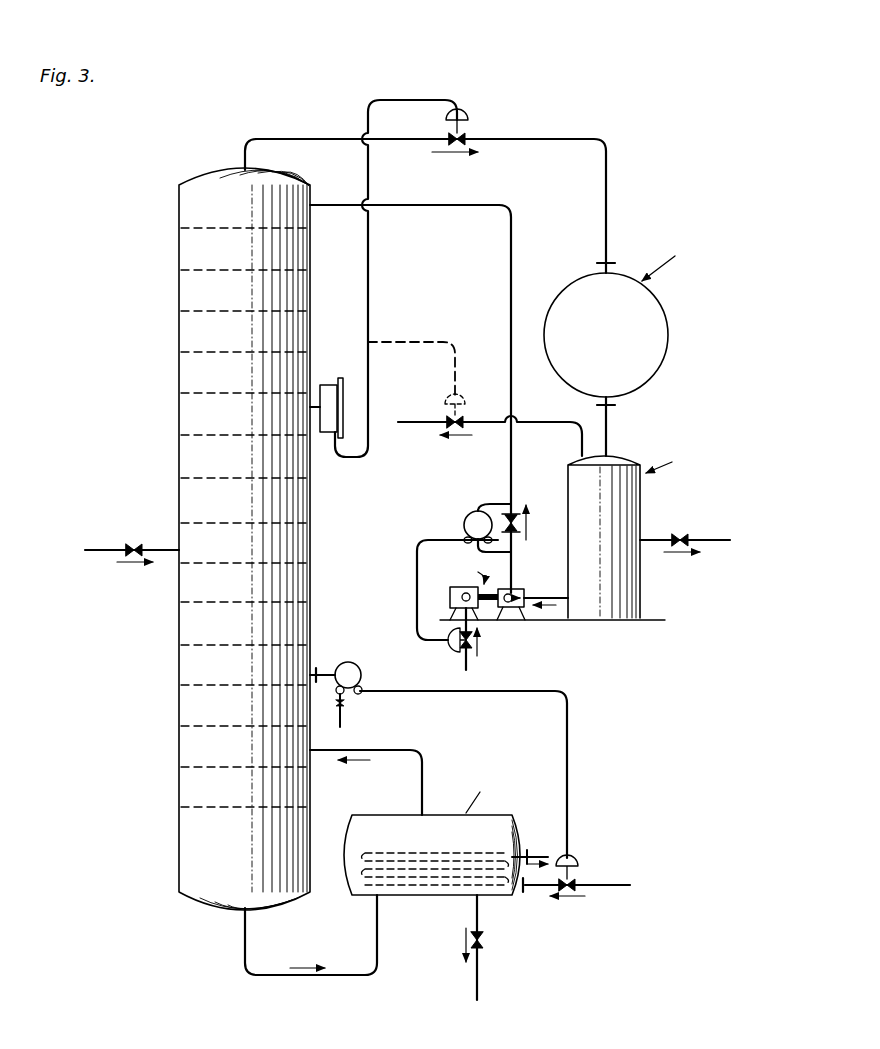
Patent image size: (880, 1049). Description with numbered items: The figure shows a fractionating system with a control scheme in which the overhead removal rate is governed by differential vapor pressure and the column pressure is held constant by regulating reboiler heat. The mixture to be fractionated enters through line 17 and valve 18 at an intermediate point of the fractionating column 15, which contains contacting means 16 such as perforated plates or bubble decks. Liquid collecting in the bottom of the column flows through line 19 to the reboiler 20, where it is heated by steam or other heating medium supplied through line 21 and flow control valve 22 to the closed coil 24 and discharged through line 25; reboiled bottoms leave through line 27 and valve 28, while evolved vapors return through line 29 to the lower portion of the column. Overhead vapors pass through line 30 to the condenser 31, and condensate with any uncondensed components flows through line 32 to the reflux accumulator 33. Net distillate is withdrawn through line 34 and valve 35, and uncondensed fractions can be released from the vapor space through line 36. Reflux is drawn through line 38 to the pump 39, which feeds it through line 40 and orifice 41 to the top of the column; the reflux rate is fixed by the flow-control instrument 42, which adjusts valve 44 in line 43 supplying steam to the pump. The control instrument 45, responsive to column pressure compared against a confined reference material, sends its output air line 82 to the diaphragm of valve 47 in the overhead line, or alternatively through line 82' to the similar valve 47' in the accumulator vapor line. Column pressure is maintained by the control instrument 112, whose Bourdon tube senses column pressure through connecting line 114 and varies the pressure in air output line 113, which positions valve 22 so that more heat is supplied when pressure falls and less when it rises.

The fractionating column 15 is at (178, 373).
The contacting means 16 is at (258, 352).
The line 17 is at (104, 538).
The valve 18 is at (134, 544).
The line 19 is at (272, 973).
The reboiler 20 is at (388, 814).
The line 21 is at (625, 882).
The flow control valve 22 is at (576, 879).
The closed coil 24 is at (494, 898).
The line 25 is at (538, 855).
The line 27 is at (474, 912).
The valve 28 is at (487, 942).
The line 29 is at (400, 740).
The line 30 is at (316, 130).
The condenser 31 is at (637, 316).
The line 32 is at (609, 427).
The reflux accumulator 33 is at (570, 482).
The line 34 is at (661, 525).
The valve 35 is at (690, 538).
The line 36 is at (540, 426).
The line 38 is at (560, 585).
The pump 39 is at (450, 598).
The line 40 is at (452, 194).
The orifice 41 is at (521, 524).
The flow-control instrument 42 is at (466, 520).
The line 43 is at (470, 664).
The valve 44 is at (480, 641).
The control instrument 45 is at (327, 384).
The valve 47 is at (466, 130).
The valve 47' is at (469, 401).
The output air line 82 is at (409, 273).
The line 82' is at (411, 356).
The control instrument 112 is at (362, 673).
The air output line 113 is at (570, 737).
The connecting line 114 is at (330, 672).